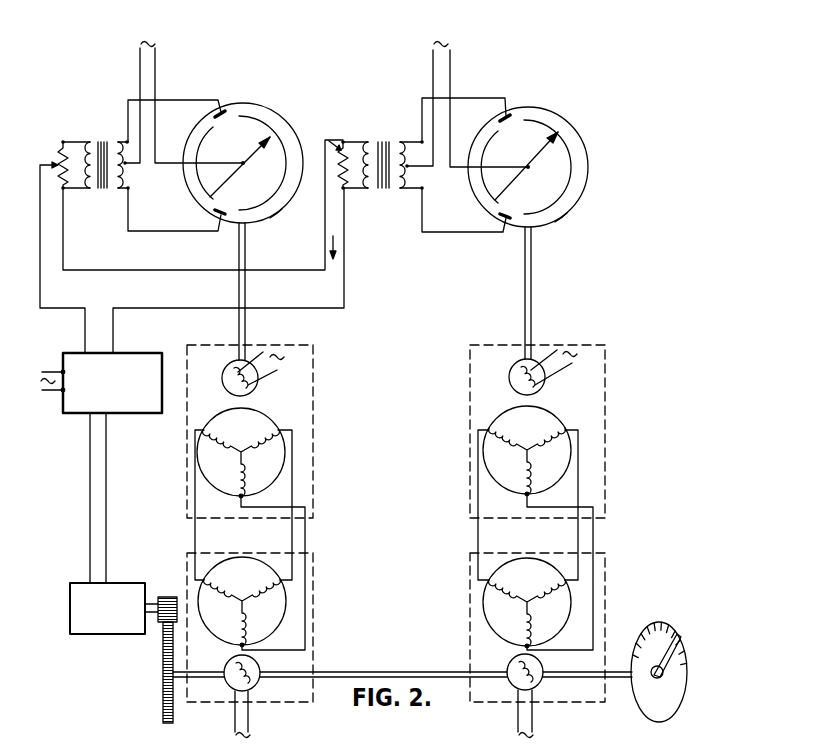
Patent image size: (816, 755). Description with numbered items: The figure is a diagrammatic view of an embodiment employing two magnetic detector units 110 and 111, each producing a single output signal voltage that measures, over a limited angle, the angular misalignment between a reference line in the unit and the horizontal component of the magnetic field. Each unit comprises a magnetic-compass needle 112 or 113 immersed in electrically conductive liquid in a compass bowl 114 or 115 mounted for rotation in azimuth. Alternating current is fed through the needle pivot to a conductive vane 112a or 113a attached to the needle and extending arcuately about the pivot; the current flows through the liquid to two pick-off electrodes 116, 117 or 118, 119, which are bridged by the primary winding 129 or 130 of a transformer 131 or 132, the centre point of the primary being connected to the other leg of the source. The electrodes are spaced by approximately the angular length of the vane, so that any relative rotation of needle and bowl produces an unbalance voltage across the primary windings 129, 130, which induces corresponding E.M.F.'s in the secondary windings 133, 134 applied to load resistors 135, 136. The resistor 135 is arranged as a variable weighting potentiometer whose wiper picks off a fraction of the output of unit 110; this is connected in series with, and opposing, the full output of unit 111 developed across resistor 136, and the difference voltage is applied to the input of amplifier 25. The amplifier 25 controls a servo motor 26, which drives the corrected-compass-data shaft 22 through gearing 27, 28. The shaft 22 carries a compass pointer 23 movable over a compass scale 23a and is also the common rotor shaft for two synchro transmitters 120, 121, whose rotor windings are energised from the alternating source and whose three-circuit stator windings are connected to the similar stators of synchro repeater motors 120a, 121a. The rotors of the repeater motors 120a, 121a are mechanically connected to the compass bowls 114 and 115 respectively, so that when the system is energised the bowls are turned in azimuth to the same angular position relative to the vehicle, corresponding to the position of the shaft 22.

The detector unit 110 is at (265, 118).
The detector unit 111 is at (553, 118).
The magnetic-compass needle 112 is at (255, 167).
The conductive vane 112a is at (197, 160).
The magnetic-compass needle 113 is at (541, 166).
The conductive vane 113a is at (484, 160).
The compass bowl 114 is at (281, 209).
The compass bowl 115 is at (568, 212).
The pick-off electrode 116 is at (223, 113).
The pick-off electrode 117 is at (222, 222).
The pick-off electrode 118 is at (512, 117).
The pick-off electrode 119 is at (508, 224).
The primary winding 129 is at (117, 138).
The primary winding 130 is at (403, 186).
The transformer 131 is at (102, 140).
The transformer 132 is at (388, 140).
The secondary winding 133 is at (86, 142).
The secondary winding 134 is at (367, 142).
The load resistor 135 is at (61, 140).
The load resistor 136 is at (337, 141).
The amplifier 25 is at (112, 383).
The servo motor 26 is at (107, 608).
The gearing 27 is at (168, 597).
The gearing 28 is at (163, 712).
The synchro repeater motor 120a is at (308, 470).
The synchro transmitter 120 is at (313, 640).
The synchro repeater motor 121a is at (475, 410).
The synchro transmitter 121 is at (475, 637).
The corrected-compass-data shaft 22 is at (347, 672).
The compass pointer 23 is at (662, 660).
The compass scale 23a is at (642, 712).